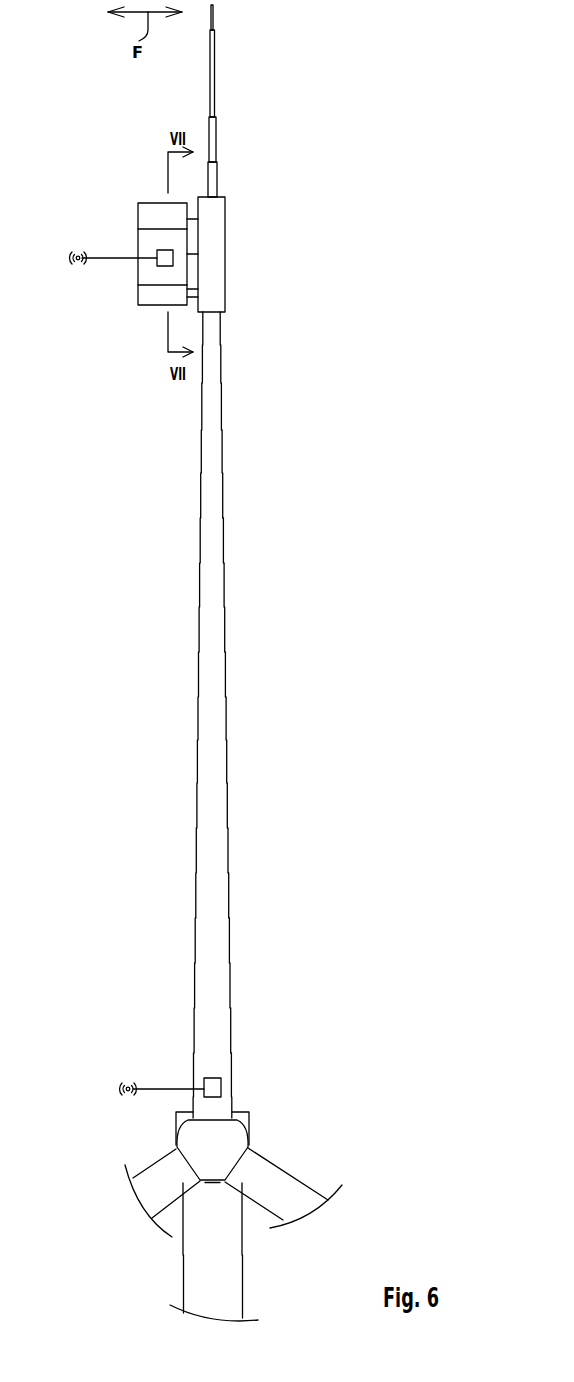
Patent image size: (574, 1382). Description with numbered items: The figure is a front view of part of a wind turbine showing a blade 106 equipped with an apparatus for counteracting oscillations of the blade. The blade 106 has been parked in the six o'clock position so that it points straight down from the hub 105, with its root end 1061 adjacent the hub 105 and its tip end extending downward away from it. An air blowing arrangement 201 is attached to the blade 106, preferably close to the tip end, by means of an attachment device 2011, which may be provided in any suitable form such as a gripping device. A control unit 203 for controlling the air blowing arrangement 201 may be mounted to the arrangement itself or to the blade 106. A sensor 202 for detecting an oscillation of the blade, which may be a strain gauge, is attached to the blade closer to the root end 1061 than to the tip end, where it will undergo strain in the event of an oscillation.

The blade 106 is at (197, 848).
The hub 105 is at (187, 1125).
The root end 1061 is at (220, 1118).
The air blowing arrangement 201 is at (128, 342).
The attachment device 2011 is at (225, 280).
The control unit 203 is at (158, 250).
The sensor 202 is at (221, 1084).